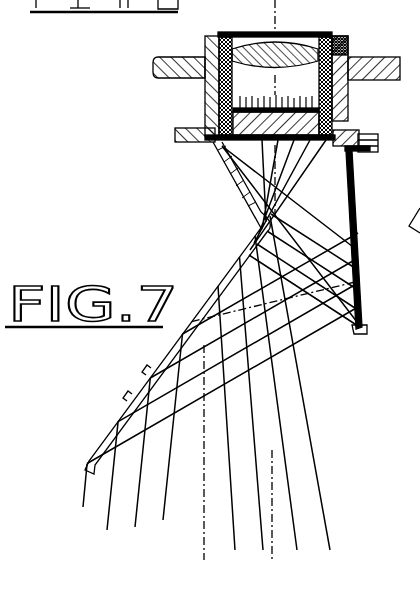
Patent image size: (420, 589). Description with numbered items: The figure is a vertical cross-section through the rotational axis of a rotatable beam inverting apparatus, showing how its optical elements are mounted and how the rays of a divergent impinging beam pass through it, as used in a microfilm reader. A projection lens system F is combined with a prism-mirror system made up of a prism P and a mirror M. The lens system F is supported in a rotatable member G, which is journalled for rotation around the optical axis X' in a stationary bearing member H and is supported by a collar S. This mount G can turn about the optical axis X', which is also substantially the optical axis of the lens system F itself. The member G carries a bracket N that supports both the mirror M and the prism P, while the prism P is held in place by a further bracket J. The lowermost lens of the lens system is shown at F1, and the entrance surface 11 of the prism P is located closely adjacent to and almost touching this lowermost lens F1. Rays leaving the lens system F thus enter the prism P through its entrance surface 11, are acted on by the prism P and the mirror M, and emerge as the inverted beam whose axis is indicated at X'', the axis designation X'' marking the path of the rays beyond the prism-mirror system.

The collar S is at (214, 38).
The projection lens system F is at (205, 90).
The rotatable member G is at (176, 140).
The stationary bearing member H is at (350, 110).
The lowermost lens F1 is at (222, 162).
The entrance surface 11 is at (224, 168).
The bracket N is at (243, 245).
The mirror M is at (117, 432).
The prism P is at (358, 228).
The bracket J is at (363, 282).
The optical axis X' is at (273, 516).
The image axis X'' is at (207, 463).